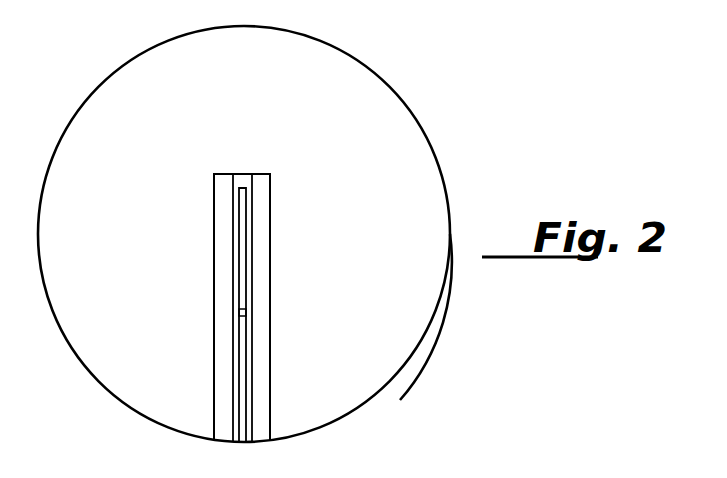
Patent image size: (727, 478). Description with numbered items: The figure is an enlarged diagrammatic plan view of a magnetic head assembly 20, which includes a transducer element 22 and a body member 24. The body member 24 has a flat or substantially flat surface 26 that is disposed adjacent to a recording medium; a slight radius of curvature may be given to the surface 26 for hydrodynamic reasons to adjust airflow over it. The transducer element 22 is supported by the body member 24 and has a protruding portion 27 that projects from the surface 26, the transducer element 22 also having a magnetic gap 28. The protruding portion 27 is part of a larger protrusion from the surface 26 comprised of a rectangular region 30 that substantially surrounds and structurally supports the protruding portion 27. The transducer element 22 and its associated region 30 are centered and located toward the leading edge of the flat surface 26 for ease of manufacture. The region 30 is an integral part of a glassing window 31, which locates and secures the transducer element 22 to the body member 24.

The magnetic head assembly 20 is at (430, 95).
The transducer element 22 is at (242, 258).
The body member 24 is at (446, 286).
The flat surface 26 is at (160, 195).
The protruding portion 27 is at (246, 152).
The magnetic gap 28 is at (243, 313).
The rectangular region 30 is at (245, 183).
The glassing window 31 is at (223, 363).